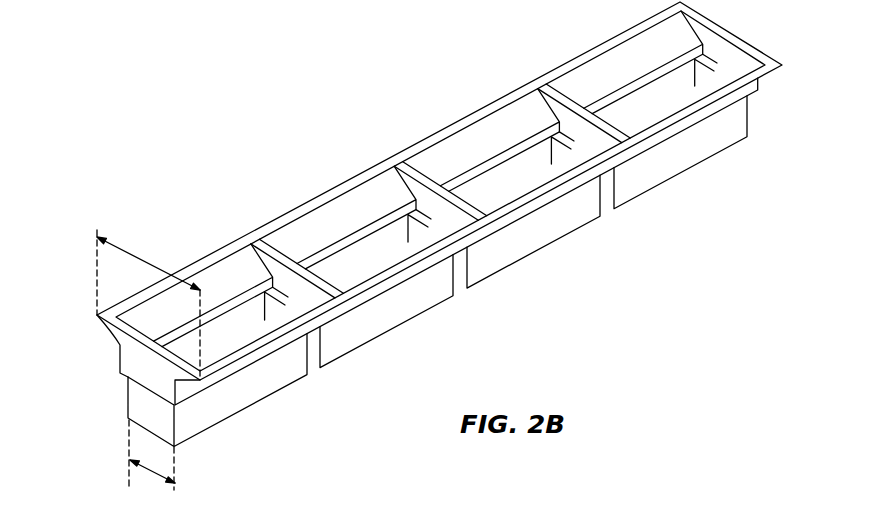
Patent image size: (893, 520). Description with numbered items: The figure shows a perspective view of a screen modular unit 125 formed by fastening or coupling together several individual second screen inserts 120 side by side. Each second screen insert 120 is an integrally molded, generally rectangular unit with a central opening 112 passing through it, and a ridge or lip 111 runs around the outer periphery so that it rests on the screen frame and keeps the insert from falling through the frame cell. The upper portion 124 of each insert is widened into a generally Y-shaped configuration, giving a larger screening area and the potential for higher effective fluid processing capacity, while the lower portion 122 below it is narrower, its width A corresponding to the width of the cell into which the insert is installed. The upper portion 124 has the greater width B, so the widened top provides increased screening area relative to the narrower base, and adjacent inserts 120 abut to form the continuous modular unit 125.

The screen modular unit 125 is at (332, 92).
The central opening 112 is at (243, 315).
The upper portion 124 is at (130, 362).
The lip 111 is at (208, 388).
The lower portion 122 is at (405, 312).
The second screen insert 120 is at (527, 250).
The width of base portion A is at (157, 474).
The width of upper portion B is at (148, 262).